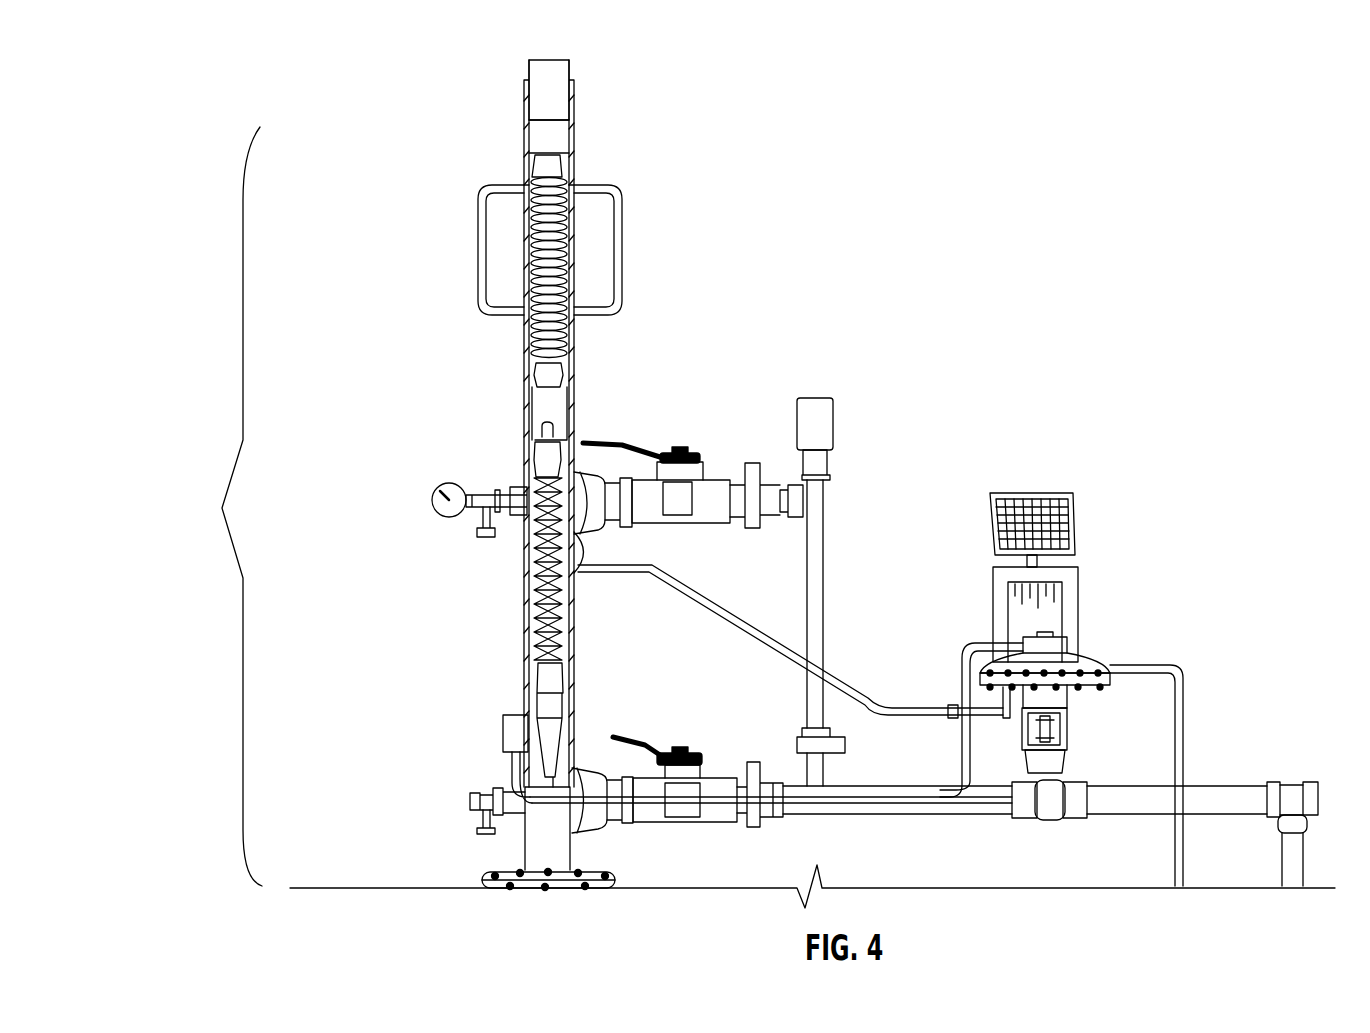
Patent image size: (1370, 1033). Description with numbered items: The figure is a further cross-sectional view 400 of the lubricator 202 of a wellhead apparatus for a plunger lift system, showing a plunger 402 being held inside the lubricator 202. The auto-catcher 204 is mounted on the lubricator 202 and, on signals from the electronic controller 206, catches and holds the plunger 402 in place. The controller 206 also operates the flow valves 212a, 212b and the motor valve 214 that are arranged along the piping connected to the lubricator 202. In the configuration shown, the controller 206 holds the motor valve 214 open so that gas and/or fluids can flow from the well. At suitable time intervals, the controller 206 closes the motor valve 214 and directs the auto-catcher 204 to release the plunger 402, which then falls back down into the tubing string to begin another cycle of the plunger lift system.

The cross-sectional view 400 is at (360, 104).
The lubricator 202 is at (595, 475).
The plunger 402 is at (527, 630).
The auto-catcher 204 is at (630, 612).
The flow valve 212a is at (697, 472).
The flow valve 212b is at (680, 797).
The electronic controller 206 is at (1118, 580).
The motor valve 214 is at (1105, 710).